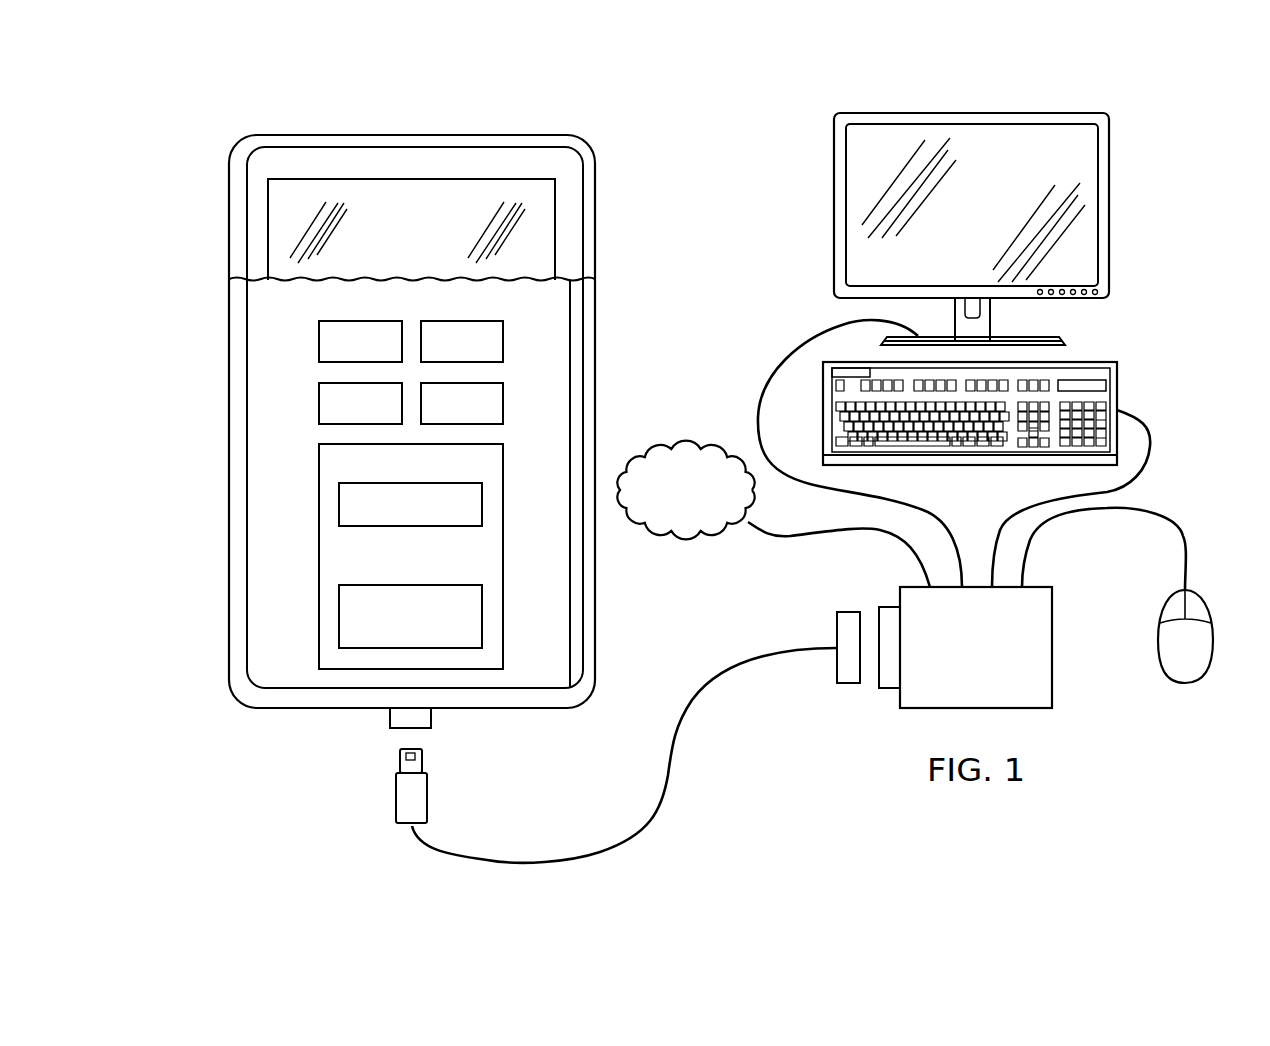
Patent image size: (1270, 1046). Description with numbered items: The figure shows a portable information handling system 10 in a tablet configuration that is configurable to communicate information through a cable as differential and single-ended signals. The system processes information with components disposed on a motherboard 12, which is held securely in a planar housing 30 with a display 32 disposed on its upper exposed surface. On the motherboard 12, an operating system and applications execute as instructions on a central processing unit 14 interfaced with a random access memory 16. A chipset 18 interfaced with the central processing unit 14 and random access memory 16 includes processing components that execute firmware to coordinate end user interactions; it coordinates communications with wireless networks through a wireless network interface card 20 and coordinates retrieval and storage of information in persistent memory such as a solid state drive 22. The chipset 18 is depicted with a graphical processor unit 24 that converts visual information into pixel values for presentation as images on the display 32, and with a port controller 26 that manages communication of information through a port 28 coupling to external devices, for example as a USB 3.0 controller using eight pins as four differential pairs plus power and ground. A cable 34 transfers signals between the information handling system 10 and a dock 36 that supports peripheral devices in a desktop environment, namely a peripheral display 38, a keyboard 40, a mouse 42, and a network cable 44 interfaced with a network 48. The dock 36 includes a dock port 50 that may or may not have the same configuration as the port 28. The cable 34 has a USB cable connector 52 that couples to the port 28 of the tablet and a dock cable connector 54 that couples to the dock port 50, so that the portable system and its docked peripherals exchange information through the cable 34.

The portable information handling system 10 is at (702, 154).
The motherboard 12 is at (238, 352).
The central processing unit 14 is at (319, 345).
The random access memory 16 is at (319, 406).
The chipset 18 is at (310, 557).
The wireless network interface card 20 is at (503, 345).
The solid state drive 22 is at (503, 406).
The graphical processor unit 24 is at (393, 527).
The port controller 26 is at (425, 585).
The port 28 is at (390, 718).
The housing 30 is at (400, 127).
The display 32 is at (399, 260).
The cable 34 is at (670, 762).
The dock 36 is at (965, 673).
The peripheral display 38 is at (1030, 113).
The keyboard 40 is at (1117, 385).
The mouse 42 is at (1182, 684).
The network cable 44 is at (787, 542).
The network 48 is at (687, 440).
The dock port 50 is at (890, 690).
The USB cable connector 52 is at (396, 798).
The dock cable connector 54 is at (837, 662).